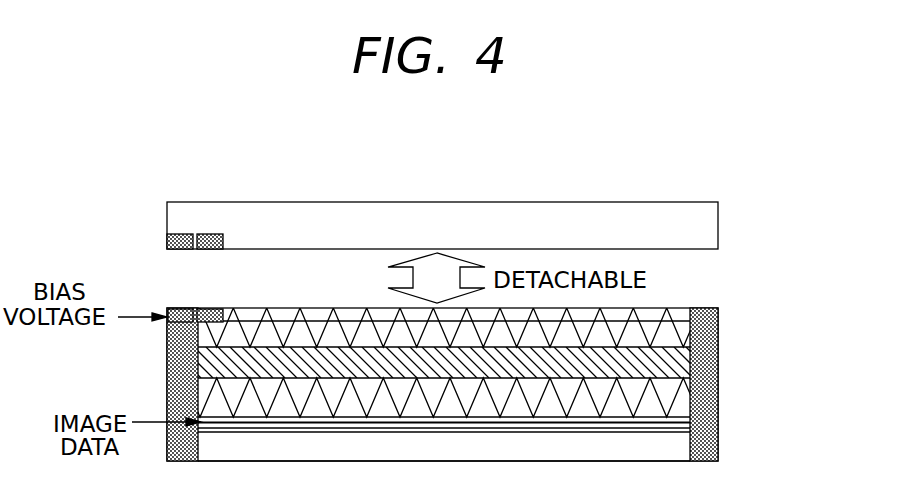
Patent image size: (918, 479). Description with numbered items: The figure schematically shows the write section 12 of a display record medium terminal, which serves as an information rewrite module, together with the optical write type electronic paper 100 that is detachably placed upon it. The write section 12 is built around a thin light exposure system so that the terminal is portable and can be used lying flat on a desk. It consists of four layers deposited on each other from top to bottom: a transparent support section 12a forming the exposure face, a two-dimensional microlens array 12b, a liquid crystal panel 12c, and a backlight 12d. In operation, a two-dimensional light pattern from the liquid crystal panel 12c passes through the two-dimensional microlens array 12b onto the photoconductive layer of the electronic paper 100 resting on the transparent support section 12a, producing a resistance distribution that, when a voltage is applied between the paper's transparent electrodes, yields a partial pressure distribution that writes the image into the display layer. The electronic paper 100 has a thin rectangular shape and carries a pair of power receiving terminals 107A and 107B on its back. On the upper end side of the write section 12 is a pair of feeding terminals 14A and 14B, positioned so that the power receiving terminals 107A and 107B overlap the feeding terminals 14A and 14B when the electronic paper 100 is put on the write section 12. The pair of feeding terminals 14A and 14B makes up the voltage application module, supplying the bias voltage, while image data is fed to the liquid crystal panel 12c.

The optical write type electronic paper 100 is at (674, 210).
The power receiving terminal 107A is at (183, 235).
The power receiving terminal 107B is at (210, 235).
The feeding terminal 14A is at (175, 308).
The feeding terminal 14B is at (215, 308).
The write section 12 is at (815, 300).
The transparent support section 12a is at (703, 313).
The two-dimensional microlens array 12b is at (678, 362).
The liquid crystal panel 12c is at (678, 421).
The backlight 12d is at (678, 445).